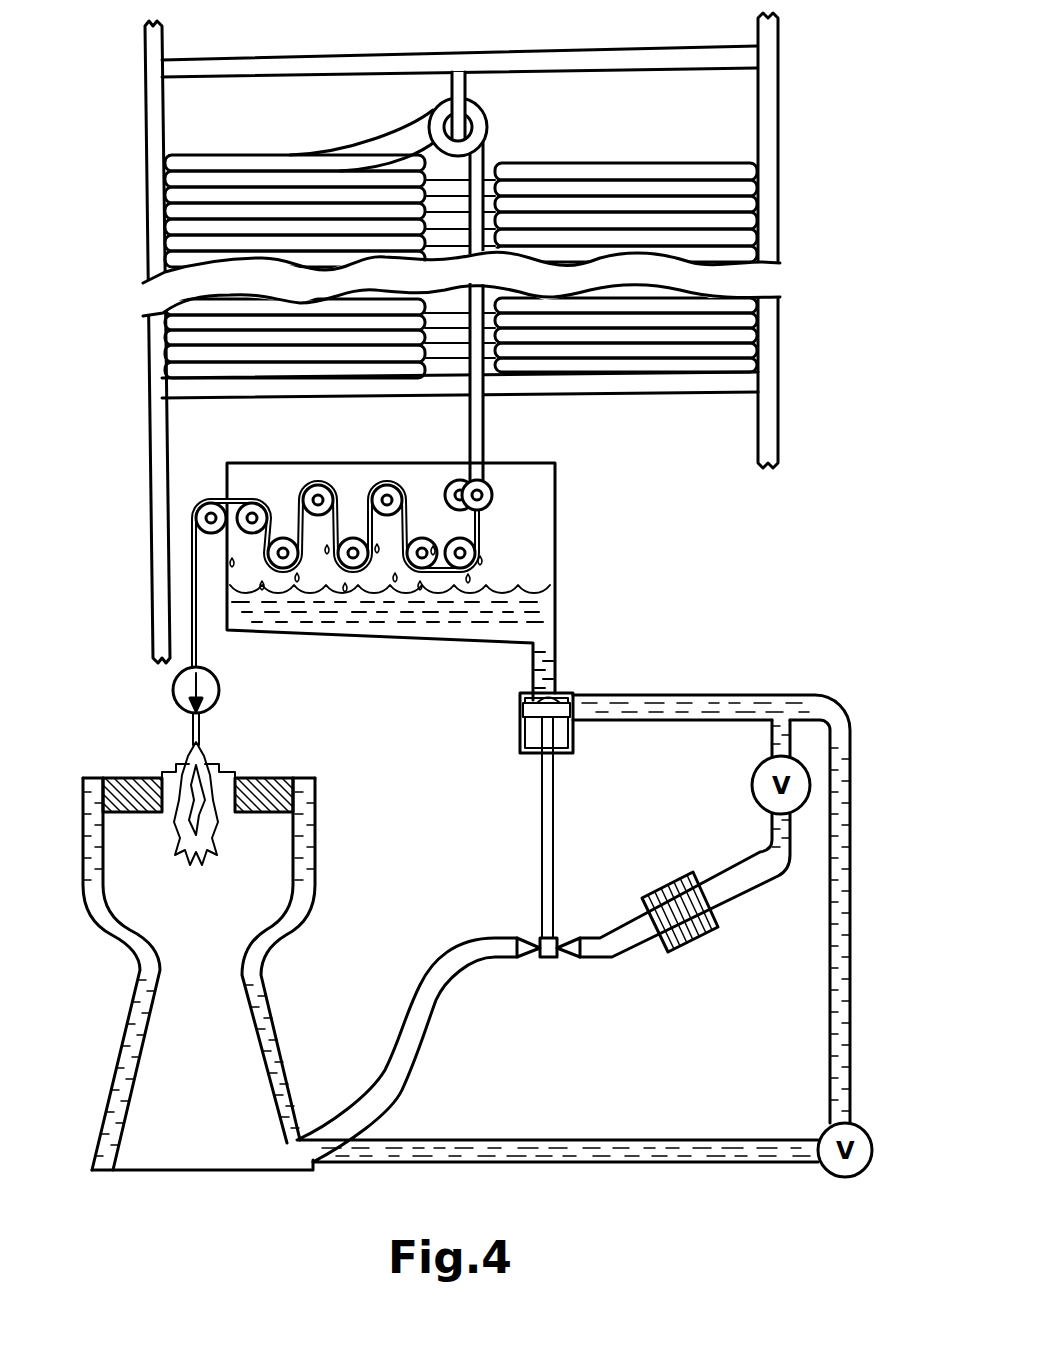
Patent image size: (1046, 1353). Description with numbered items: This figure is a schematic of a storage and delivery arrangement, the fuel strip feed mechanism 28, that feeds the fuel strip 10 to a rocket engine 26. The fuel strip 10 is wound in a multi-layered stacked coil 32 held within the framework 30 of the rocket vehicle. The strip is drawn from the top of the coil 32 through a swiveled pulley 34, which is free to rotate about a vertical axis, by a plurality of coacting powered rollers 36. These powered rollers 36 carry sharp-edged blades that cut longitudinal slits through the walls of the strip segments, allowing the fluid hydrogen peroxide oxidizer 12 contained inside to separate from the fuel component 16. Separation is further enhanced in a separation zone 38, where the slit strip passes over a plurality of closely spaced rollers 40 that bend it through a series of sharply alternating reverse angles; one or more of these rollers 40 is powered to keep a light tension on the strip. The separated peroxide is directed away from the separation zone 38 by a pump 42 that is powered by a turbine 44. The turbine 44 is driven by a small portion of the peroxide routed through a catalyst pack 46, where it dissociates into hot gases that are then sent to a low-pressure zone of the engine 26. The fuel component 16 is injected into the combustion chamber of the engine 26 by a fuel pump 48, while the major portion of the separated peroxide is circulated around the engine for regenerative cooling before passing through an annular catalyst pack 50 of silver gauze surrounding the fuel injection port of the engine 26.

The fuel strip 10 is at (258, 213).
The H2O2 oxidizer 12 is at (440, 630).
The fuel component 16 is at (466, 528).
The engine 26 is at (214, 1044).
The fuel strip feed mechanism 28 is at (580, 546).
The framework 30 is at (776, 135).
The coil 32 is at (634, 147).
The swiveled pulley 34 is at (474, 120).
The powered rollers 36 is at (487, 490).
The separation zone 38 is at (528, 556).
The rollers 40 is at (373, 493).
The pump 42 is at (518, 717).
The turbine 44 is at (538, 938).
The catalyst pack 46 is at (660, 887).
The fuel pump 48 is at (218, 675).
The annular catalyst pack 50 is at (140, 776).